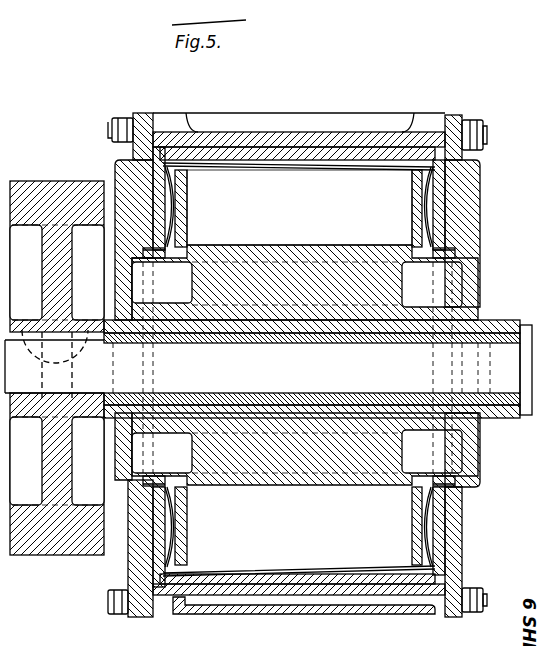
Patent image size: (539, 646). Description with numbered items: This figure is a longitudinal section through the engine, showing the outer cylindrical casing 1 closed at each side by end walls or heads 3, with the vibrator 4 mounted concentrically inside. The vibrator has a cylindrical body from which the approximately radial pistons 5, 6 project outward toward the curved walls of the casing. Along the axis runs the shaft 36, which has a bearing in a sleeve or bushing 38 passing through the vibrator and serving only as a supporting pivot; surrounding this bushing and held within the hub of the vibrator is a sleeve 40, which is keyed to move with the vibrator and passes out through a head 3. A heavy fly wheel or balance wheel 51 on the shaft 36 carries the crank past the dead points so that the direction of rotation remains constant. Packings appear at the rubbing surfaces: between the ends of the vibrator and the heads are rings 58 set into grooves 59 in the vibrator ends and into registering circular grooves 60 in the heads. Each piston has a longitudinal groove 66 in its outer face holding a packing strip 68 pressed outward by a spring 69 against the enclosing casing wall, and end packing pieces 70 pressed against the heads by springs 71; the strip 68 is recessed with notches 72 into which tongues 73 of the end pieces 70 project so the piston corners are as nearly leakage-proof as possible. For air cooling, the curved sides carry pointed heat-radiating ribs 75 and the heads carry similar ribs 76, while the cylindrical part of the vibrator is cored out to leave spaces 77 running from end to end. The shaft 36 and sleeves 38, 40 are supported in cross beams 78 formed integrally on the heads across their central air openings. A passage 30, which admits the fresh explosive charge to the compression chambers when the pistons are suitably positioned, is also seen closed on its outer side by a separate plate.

The outer cylindrical casing 1 is at (280, 120).
The end wall or head 3 is at (143, 176).
The vibrator 4 is at (205, 455).
The piston 5 is at (250, 592).
The piston 6 is at (310, 180).
The passage 30 is at (355, 613).
The shaft 36 is at (497, 296).
The sleeve or bushing 38 is at (265, 400).
The sleeve 40 is at (366, 334).
The fly wheel or balance wheel 51 is at (60, 544).
The ring 58 is at (150, 255).
The groove 59 is at (190, 246).
The circular groove 60 is at (148, 251).
The longitudinal recess or groove 66 is at (210, 152).
The packing strip 68 is at (362, 145).
The spring 69 is at (290, 164).
The packing piece 70 is at (183, 206).
The spring 71 is at (171, 216).
The notch 72 is at (165, 160).
The tongue 73 is at (152, 157).
The heat-radiating rib 75 is at (356, 112).
The rib 76 is at (476, 191).
The space 77 is at (470, 284).
The cross beam 78 is at (470, 472).